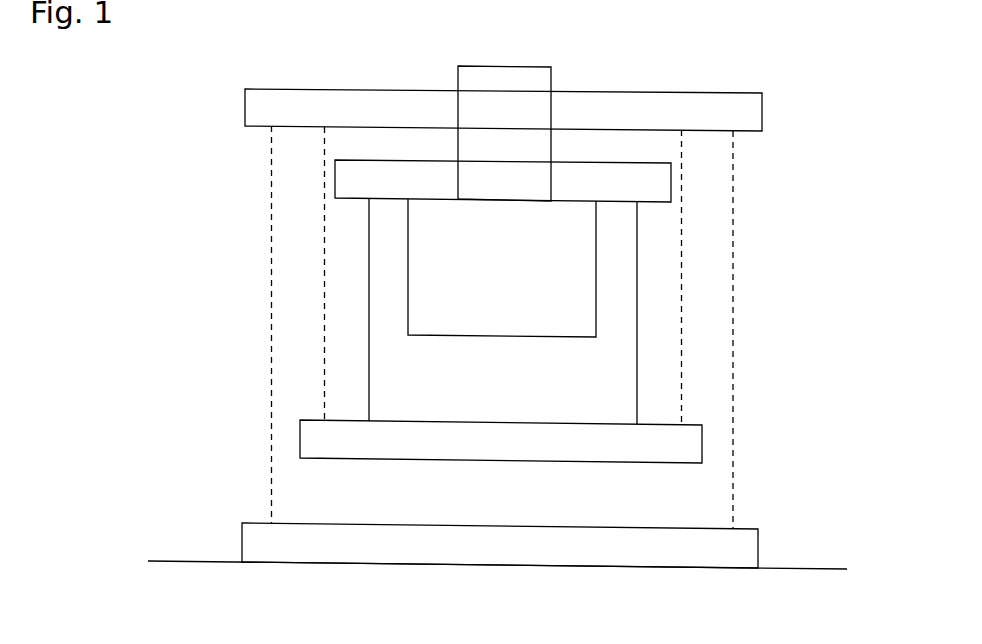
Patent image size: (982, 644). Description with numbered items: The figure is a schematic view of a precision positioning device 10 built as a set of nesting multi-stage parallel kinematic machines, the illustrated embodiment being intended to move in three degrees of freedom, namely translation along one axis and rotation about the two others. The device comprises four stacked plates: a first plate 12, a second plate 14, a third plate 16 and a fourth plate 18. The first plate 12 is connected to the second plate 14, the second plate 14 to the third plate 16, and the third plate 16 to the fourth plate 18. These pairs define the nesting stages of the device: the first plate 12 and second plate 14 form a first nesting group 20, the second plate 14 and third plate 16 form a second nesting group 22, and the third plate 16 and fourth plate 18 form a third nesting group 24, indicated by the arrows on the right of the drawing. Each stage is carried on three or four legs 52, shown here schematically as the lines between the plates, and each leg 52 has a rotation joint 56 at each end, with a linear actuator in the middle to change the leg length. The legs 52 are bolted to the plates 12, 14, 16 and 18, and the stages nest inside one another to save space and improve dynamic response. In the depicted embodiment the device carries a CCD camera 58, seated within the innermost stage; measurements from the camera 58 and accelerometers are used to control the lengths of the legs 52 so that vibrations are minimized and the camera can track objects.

The precision positioning device 10 is at (772, 71).
The first plate 12 is at (417, 191).
The second plate 14 is at (414, 450).
The third plate 16 is at (417, 121).
The fourth plate 18 is at (412, 556).
The first nesting group 20 is at (659, 243).
The second nesting group 22 is at (703, 237).
The third nesting group 24 is at (747, 232).
The leg 52 is at (501, 327).
The rotation joint 56 is at (263, 227).
The CCD camera 58 is at (517, 269).